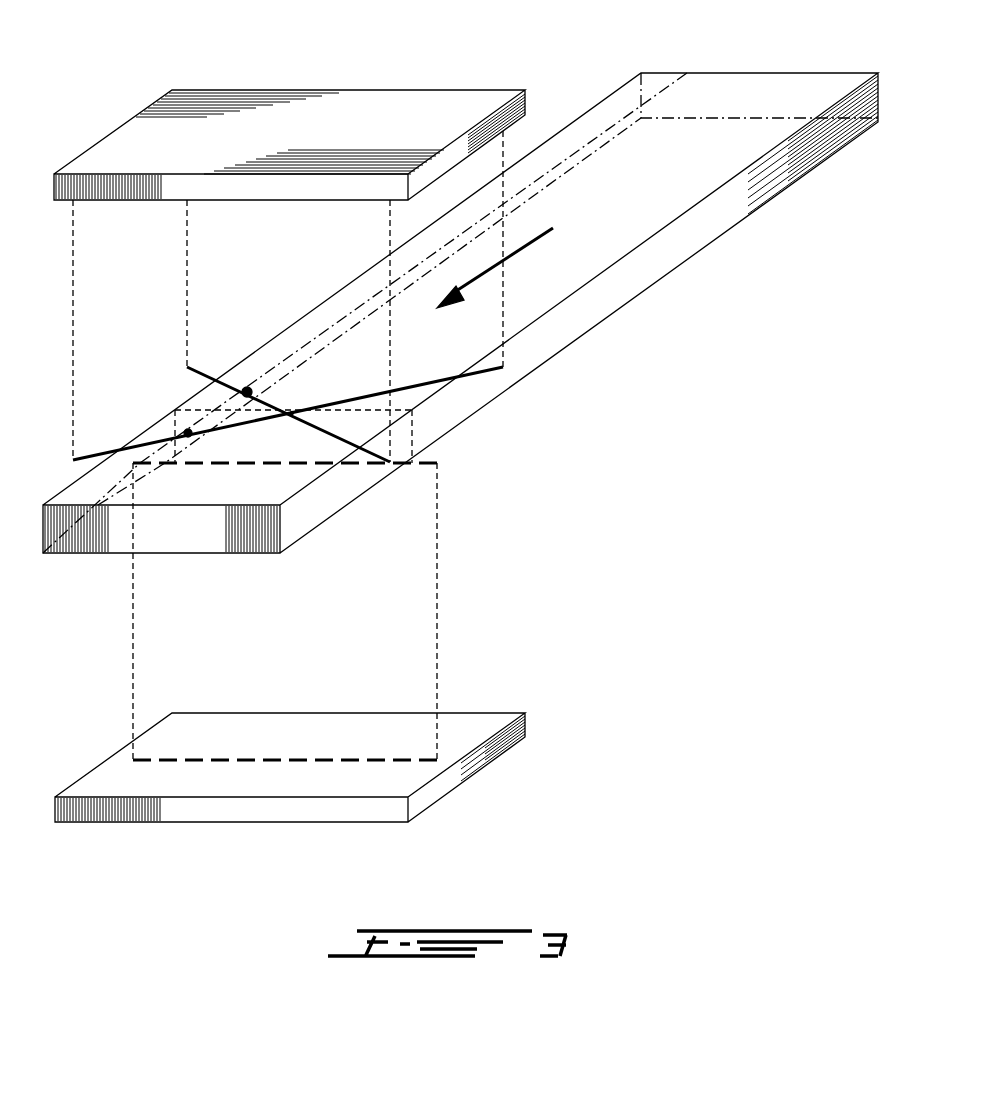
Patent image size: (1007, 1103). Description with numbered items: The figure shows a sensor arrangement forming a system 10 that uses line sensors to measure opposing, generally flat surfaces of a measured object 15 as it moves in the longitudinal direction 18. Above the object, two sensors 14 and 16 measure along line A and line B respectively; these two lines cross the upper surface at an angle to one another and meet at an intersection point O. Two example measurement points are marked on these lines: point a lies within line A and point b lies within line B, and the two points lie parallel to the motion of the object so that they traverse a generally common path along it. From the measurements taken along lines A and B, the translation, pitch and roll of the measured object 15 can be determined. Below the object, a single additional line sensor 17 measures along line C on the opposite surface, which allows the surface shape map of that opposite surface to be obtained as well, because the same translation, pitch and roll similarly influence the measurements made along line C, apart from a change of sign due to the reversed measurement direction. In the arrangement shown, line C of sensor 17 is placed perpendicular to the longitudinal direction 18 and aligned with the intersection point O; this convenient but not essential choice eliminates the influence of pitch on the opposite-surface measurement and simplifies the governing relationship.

The system 10 is at (625, 553).
The sensor 14 is at (289, 104).
The sensor 16 is at (287, 118).
The measured object 15 is at (713, 218).
The line sensor 17 is at (483, 765).
The direction 18 is at (523, 253).
The line A is at (80, 459).
The line B is at (186, 368).
The line C is at (437, 465).
The intersection point O is at (292, 412).
The measurement point a is at (192, 434).
The measurement point b is at (247, 390).